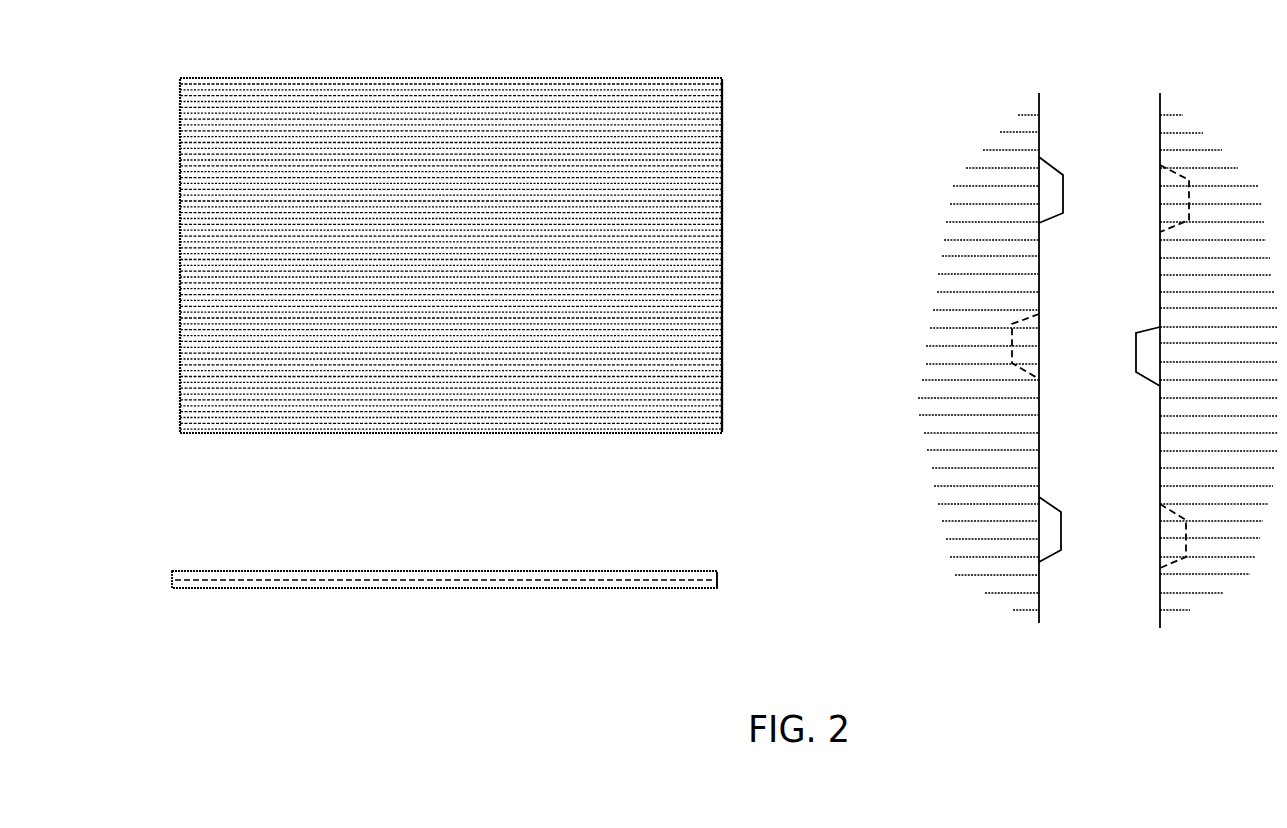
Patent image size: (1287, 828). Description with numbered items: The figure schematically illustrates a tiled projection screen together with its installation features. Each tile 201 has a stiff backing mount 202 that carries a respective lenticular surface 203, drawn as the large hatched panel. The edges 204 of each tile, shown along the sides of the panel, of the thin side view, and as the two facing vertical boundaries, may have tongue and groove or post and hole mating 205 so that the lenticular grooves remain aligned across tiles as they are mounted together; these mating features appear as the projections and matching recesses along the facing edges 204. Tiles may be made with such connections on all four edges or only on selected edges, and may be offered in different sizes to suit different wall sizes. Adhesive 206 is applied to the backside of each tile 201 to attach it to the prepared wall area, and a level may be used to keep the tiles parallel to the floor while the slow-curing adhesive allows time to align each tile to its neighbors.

The tile 201 is at (465, 60).
The stiff backing mount 202 is at (206, 266).
The lenticular surface 203 is at (263, 555).
The edges 204 is at (736, 233).
The tongue and groove or post and hole mating 205 is at (1148, 524).
The adhesive 206 is at (620, 555).